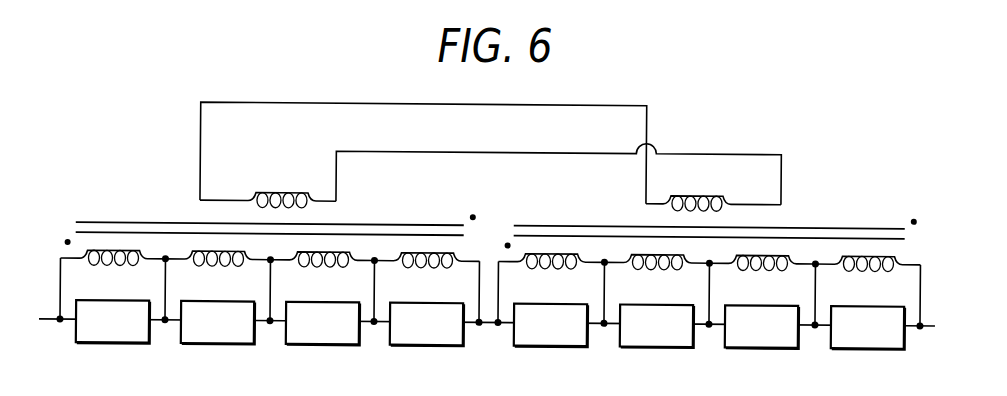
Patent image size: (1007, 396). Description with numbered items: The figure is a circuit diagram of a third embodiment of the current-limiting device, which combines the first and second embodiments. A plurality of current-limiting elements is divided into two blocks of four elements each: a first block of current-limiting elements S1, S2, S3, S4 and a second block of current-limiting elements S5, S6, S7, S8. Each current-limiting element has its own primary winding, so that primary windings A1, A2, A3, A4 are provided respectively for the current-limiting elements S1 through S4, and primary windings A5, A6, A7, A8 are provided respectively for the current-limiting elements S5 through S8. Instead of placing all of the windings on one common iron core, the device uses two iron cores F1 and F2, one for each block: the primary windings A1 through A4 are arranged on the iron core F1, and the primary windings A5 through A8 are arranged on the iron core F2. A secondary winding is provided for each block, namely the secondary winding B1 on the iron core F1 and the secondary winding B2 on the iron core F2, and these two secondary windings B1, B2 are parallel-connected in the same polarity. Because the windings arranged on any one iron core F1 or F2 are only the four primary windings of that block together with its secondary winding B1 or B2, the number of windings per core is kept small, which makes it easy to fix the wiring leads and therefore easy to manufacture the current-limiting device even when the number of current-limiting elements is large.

The primary winding A1 is at (112, 273).
The primary winding A2 is at (217, 274).
The primary winding A3 is at (322, 275).
The primary winding A4 is at (426, 276).
The primary winding A5 is at (551, 277).
The primary winding A6 is at (656, 277).
The primary winding A7 is at (762, 278).
The primary winding A8 is at (867, 279).
The current-limiting element S1 is at (113, 322).
The current-limiting element S2 is at (218, 323).
The current-limiting element S3 is at (323, 324).
The current-limiting element S4 is at (427, 325).
The current-limiting element S5 is at (551, 326).
The current-limiting element S6 is at (657, 326).
The current-limiting element S7 is at (762, 327).
The current-limiting element S8 is at (868, 328).
The secondary winding B1 is at (423, 156).
The secondary winding B2 is at (559, 176).
The iron core F1 is at (270, 221).
The iron core F2 is at (711, 224).